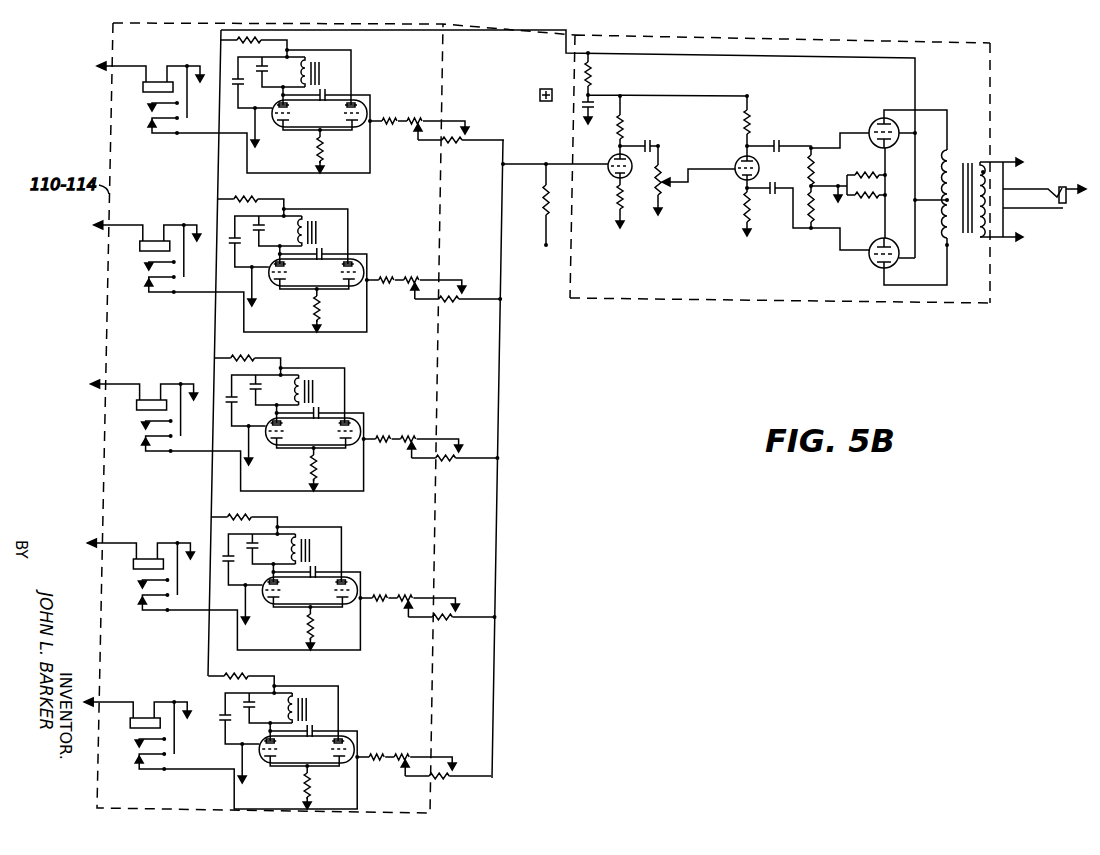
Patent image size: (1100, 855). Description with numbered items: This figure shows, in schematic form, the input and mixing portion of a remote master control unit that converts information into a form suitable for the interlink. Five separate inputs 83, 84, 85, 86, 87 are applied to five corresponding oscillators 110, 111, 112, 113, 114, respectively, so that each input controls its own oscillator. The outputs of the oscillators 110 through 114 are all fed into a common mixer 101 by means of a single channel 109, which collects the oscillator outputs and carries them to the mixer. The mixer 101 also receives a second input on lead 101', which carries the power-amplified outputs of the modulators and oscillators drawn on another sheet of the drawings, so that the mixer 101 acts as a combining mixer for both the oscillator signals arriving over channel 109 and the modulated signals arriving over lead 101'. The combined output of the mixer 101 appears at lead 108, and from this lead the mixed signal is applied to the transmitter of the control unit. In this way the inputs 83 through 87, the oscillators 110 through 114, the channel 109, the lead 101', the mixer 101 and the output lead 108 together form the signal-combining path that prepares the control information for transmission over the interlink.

The input 83 is at (100, 65).
The input 84 is at (102, 227).
The input 85 is at (100, 386).
The input 86 is at (98, 541).
The input 87 is at (95, 685).
The oscillator 110 is at (340, 105).
The oscillator 111 is at (337, 264).
The oscillator 112 is at (334, 423).
The oscillator 113 is at (330, 582).
The oscillator 114 is at (327, 741).
The channel 109 is at (518, 164).
The mixer 101 is at (780, 180).
The lead 101' is at (536, 220).
The lead 108 is at (1067, 190).